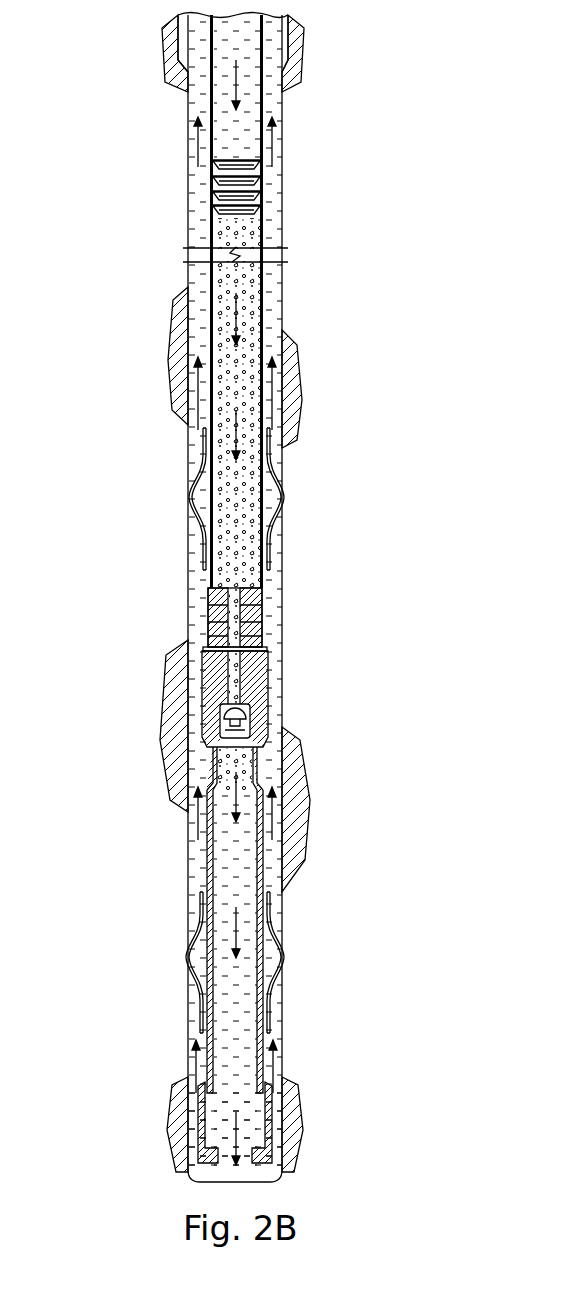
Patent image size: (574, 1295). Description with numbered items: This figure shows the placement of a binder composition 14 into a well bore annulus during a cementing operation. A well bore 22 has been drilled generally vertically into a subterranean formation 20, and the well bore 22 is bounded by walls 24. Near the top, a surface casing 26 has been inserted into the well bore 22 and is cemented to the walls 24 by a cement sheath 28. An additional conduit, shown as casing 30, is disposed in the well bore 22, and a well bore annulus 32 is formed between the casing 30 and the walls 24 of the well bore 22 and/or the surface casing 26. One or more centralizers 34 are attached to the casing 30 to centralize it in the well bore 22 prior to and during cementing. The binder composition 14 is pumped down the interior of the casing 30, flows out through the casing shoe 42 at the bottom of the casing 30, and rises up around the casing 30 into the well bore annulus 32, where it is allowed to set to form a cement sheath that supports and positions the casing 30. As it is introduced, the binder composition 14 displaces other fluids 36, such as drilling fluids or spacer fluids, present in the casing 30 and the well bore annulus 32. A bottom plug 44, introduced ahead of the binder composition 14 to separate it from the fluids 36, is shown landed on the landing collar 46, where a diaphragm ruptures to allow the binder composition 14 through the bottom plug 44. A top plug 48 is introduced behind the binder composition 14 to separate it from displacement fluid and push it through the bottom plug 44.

The binder composition 14 is at (233, 305).
The subterranean formation 20 is at (403, 611).
The well bore 22 is at (294, 445).
The walls 24 is at (282, 183).
The surface casing 26 is at (278, 33).
The cement sheath 28 is at (282, 77).
The casing 30 is at (263, 340).
The well bore annulus 32 is at (198, 418).
The centralizers 34 is at (203, 937).
The fluids 36 is at (233, 787).
The casing shoe 42 is at (198, 1132).
The bottom plug 44 is at (208, 607).
The landing collar 46 is at (202, 693).
The top plug 48 is at (207, 213).